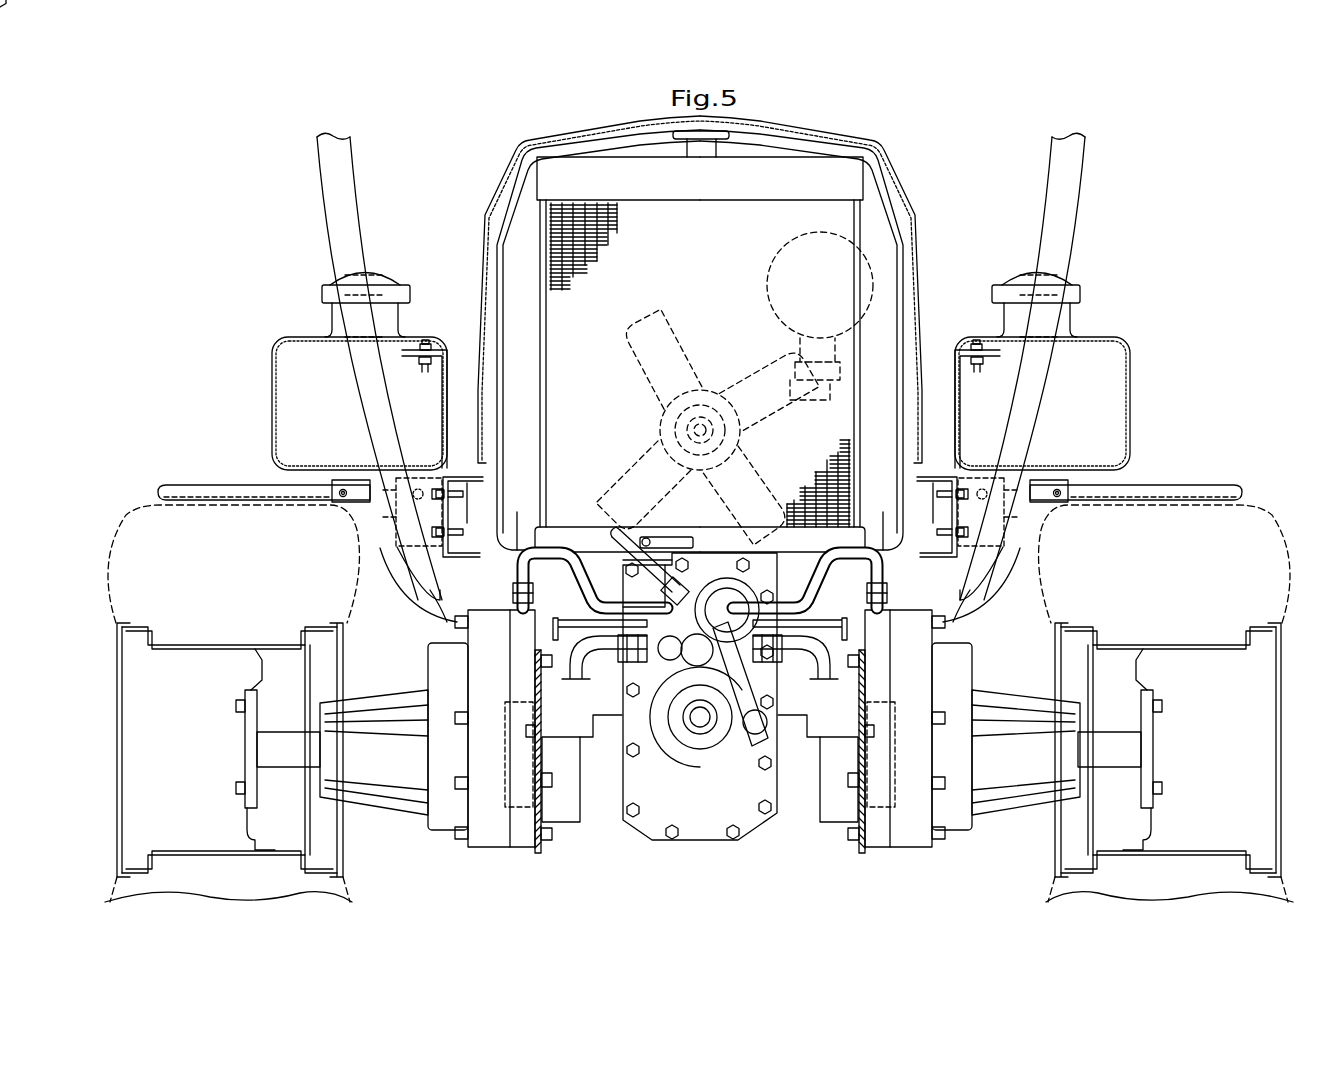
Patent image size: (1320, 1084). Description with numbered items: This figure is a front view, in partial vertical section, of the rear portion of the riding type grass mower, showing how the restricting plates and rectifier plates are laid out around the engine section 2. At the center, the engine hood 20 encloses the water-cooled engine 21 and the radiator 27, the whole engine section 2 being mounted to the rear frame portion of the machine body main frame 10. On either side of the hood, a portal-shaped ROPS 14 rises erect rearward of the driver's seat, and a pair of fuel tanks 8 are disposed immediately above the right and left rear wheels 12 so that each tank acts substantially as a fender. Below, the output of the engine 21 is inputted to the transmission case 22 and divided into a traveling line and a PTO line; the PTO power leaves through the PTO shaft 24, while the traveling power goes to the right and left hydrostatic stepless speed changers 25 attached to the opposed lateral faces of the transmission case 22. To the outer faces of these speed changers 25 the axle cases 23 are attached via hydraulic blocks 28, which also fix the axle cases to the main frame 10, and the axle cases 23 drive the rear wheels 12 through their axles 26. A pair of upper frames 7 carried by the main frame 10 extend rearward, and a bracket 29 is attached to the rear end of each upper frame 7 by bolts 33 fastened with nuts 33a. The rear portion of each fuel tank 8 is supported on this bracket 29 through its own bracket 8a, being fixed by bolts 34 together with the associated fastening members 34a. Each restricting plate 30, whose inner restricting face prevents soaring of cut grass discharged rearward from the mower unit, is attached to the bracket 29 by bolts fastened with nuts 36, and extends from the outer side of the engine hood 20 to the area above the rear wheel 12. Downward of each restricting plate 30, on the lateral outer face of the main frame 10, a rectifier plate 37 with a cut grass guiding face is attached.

The engine section 2 is at (912, 158).
The upper frame 7 is at (447, 477).
The fuel tank 8 is at (298, 340).
The bracket 8a is at (410, 352).
The machine body main frame 10 is at (543, 805).
The rear wheel 12 is at (145, 505).
The ROPS 14 is at (330, 198).
The engine hood 20 is at (507, 172).
The engine 21 is at (705, 300).
The transmission case 22 is at (692, 842).
The axle case 23 is at (445, 830).
The PTO shaft 24 is at (700, 722).
The hydrostatic stepless speed changer 25 is at (590, 722).
The axle 26 is at (278, 760).
The radiator 27 is at (543, 257).
The hydraulic block 28 is at (518, 845).
The bracket 29 is at (365, 498).
The restricting plate 30 is at (232, 480).
The bolt 33 is at (437, 497).
The nut 33a is at (450, 533).
The bolt 34 is at (428, 344).
The bolt 34a is at (427, 372).
The nut 36 is at (340, 494).
The rectifier plate 37 is at (505, 704).